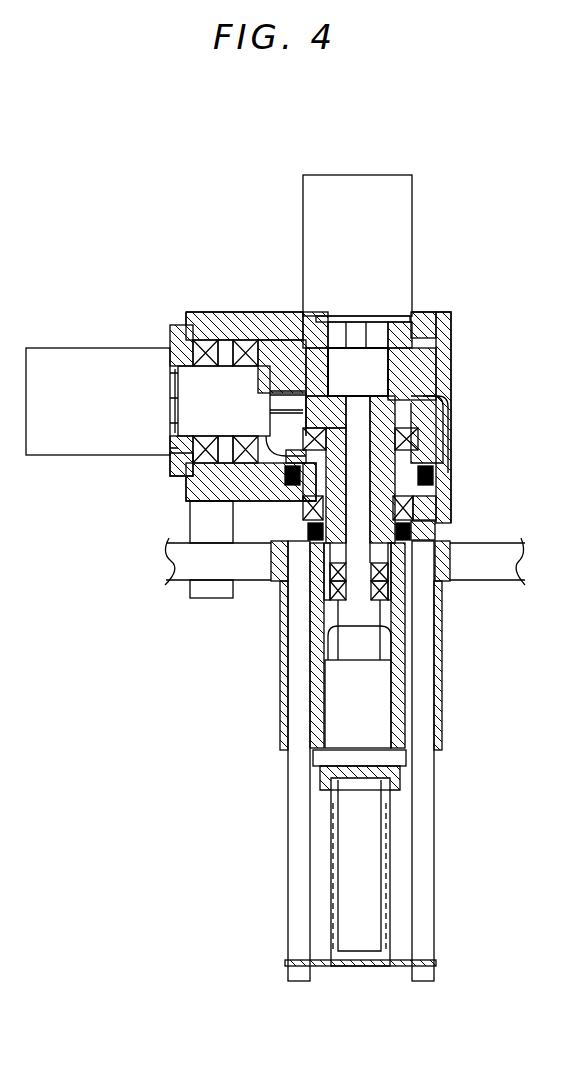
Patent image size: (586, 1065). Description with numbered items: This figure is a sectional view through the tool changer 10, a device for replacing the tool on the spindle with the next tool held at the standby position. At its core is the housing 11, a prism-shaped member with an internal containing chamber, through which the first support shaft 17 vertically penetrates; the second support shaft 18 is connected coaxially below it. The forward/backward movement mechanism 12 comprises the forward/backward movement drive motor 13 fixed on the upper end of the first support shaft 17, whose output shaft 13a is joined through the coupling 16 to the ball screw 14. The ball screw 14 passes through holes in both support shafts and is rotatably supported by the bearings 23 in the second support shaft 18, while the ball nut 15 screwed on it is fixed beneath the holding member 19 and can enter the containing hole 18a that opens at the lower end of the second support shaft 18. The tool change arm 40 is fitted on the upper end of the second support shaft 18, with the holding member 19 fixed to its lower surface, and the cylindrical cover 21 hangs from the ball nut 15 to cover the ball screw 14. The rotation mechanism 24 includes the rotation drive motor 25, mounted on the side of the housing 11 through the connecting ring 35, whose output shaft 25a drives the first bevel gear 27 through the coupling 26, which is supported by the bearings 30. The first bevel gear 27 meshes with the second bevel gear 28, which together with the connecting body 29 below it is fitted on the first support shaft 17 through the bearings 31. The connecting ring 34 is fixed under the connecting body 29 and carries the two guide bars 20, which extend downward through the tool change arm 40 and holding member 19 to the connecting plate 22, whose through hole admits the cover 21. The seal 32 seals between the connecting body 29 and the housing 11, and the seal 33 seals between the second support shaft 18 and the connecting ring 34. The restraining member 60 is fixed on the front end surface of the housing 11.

The tool changer 10 is at (108, 730).
The housing 11 is at (443, 333).
The forward/backward movement mechanism 12 is at (258, 224).
The forward/backward movement drive motor 13 is at (307, 190).
The output shaft 13a is at (347, 333).
The ball screw 14 is at (370, 855).
The ball nut 15 is at (330, 738).
The coupling 16 is at (378, 370).
The first support shaft 17 is at (422, 310).
The second support shaft 18 is at (397, 642).
The containing hole 18a is at (385, 648).
The holding member 19 is at (440, 728).
The guide bars 20 is at (291, 875).
The cover 21 is at (328, 930).
The connecting plate 22 is at (320, 962).
The bearings 23 is at (380, 588).
The rotation mechanism 24 is at (143, 300).
The rotation drive motor 25 is at (62, 352).
The output shaft 25a is at (167, 393).
The coupling 26 is at (170, 350).
The first bevel gear 27 is at (260, 350).
The second bevel gear 28 is at (437, 422).
The connecting body 29 is at (435, 507).
The bearings 30 is at (240, 343).
The bearings 31 is at (437, 492).
The seal 32 is at (262, 474).
The seal 33 is at (433, 527).
The connecting ring 34 is at (278, 535).
The connecting ring 35 is at (173, 465).
The tool change arm 40 is at (163, 563).
The restraining member 60 is at (200, 595).